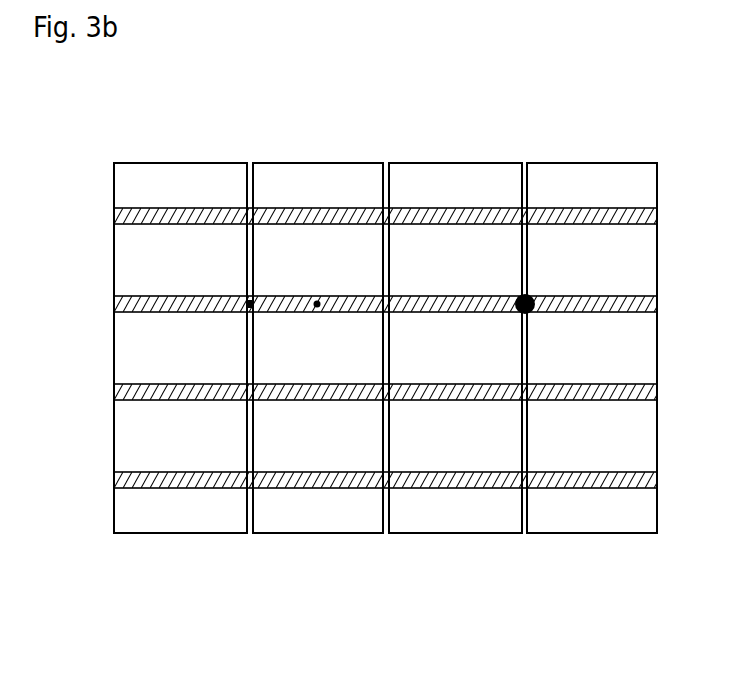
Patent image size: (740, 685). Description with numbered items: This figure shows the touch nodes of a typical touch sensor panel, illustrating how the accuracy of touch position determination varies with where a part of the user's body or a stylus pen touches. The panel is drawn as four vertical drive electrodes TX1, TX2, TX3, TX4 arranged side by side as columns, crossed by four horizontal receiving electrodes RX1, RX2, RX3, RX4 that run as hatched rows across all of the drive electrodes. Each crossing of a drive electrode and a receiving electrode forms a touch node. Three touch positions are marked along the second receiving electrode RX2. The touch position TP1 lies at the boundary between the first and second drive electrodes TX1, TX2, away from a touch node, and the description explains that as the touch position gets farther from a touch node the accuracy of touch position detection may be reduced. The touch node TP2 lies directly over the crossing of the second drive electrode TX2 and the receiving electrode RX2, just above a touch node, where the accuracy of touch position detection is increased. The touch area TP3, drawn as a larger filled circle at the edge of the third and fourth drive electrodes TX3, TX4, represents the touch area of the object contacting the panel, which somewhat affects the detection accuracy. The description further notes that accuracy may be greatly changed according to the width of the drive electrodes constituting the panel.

The first transmit electrode TX1 is at (181, 163).
The second transmit electrode TX2 is at (319, 163).
The third transmit electrode TX3 is at (456, 163).
The fourth transmit electrode TX4 is at (593, 163).
The first receive electrode RX1 is at (114, 216).
The second receive electrode RX2 is at (114, 304).
The third receive electrode RX3 is at (114, 392).
The fourth receive electrode RX4 is at (114, 480).
The touch position TP1 is at (251, 299).
The touch node TP2 is at (318, 301).
The touch area TP3 is at (533, 298).